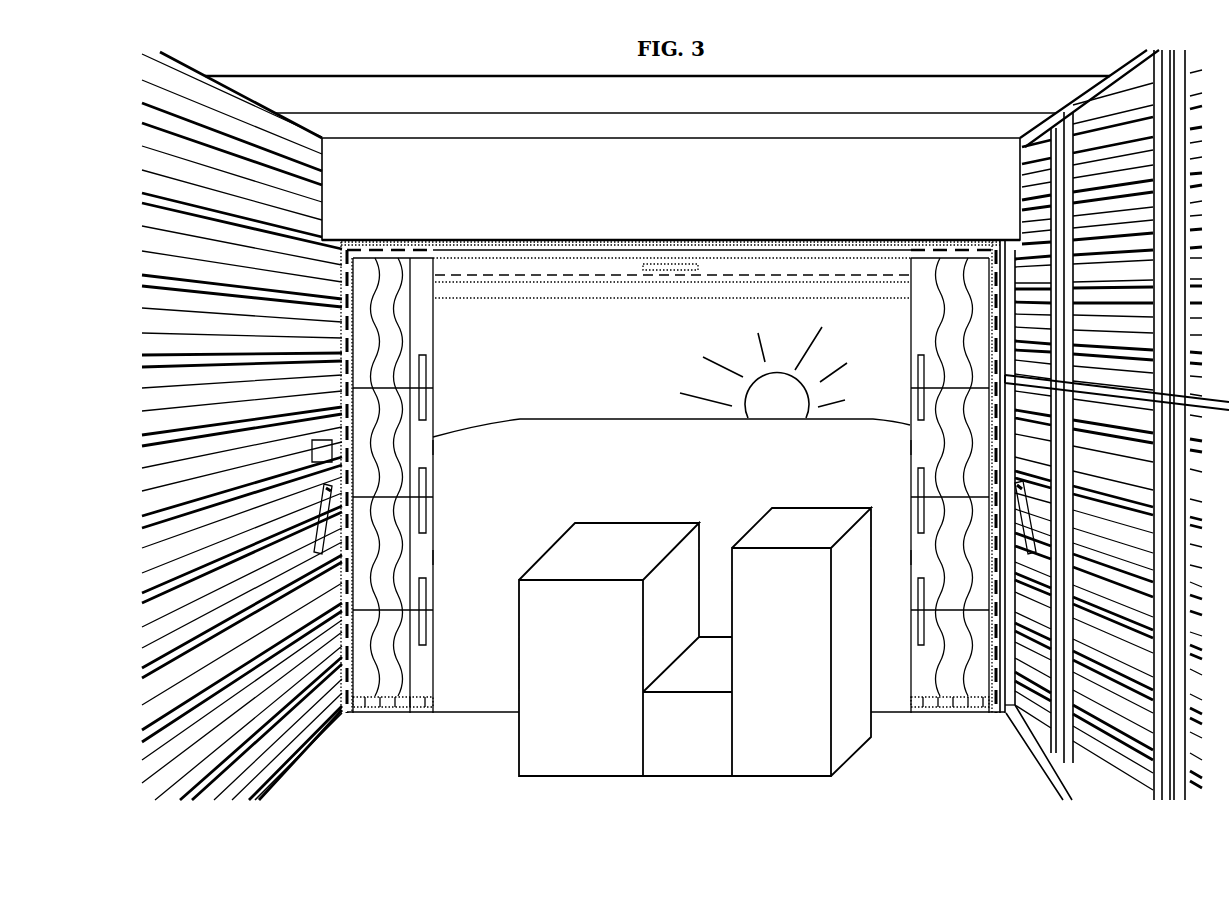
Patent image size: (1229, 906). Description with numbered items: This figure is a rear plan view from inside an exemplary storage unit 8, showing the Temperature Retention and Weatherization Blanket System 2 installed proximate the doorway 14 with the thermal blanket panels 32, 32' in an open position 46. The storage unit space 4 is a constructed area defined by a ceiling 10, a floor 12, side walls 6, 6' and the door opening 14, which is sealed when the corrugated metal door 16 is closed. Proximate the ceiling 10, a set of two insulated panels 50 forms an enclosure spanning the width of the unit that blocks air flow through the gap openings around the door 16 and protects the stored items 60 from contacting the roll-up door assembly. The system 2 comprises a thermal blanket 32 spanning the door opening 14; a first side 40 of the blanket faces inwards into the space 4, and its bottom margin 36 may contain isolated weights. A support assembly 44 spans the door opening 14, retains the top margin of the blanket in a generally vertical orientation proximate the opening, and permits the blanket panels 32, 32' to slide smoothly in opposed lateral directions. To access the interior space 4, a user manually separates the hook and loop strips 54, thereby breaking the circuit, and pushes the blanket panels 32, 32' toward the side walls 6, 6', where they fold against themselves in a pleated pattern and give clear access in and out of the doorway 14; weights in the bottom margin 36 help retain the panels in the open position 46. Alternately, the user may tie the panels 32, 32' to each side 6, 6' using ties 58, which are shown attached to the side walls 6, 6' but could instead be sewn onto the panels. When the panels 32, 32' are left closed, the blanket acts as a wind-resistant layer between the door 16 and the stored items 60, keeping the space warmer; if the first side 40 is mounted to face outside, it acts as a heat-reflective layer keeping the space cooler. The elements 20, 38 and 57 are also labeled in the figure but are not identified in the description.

The Temperature Retention and Weatherization Blanket System 2 is at (967, 760).
The storage unit space 4 is at (726, 609).
The side wall 6 is at (242, 426).
The side wall 6' is at (1114, 425).
The storage unit 8 is at (942, 103).
The ceiling 10 is at (689, 109).
The floor 12 is at (488, 788).
The door opening 14 is at (535, 381).
The corrugated metal door 16 is at (560, 268).
The track 20 is at (775, 285).
The thermal blanket panel 32 is at (418, 485).
The thermal blanket panel 32' is at (932, 477).
The bottom margin 36 is at (397, 707).
The wall mounting strip 38 is at (342, 325).
The first side of the blanket 40 is at (428, 443).
The support assembly 44 is at (497, 250).
The open position 46 is at (428, 553).
The insulated panels 50 is at (708, 196).
The hook and loop strips 54 is at (427, 388).
The switch box 57 is at (312, 450).
The ties 58 is at (312, 525).
The stored items 60 is at (598, 687).